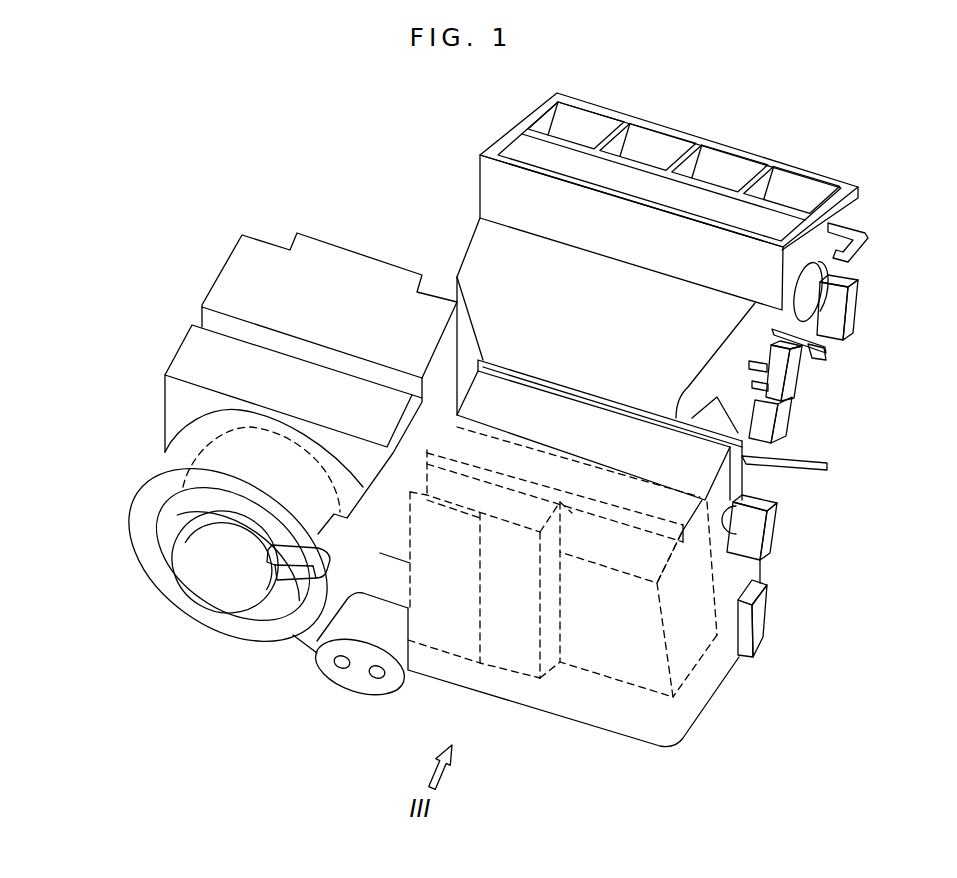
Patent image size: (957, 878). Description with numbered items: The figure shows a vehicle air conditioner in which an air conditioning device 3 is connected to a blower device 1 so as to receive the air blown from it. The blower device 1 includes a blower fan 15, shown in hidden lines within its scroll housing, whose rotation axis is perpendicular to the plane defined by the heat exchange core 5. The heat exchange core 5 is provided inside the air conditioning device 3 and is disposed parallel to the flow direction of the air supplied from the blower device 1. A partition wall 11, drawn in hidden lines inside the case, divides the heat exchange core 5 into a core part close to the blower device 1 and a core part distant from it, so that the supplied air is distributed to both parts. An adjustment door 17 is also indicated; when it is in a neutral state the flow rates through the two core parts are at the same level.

The blower device 1 is at (350, 236).
The air conditioning device 3 is at (603, 748).
The heat exchange core 5 is at (690, 660).
The partition wall 11 is at (515, 647).
The blower fan 15 is at (217, 460).
The adjustment door 17 is at (447, 633).